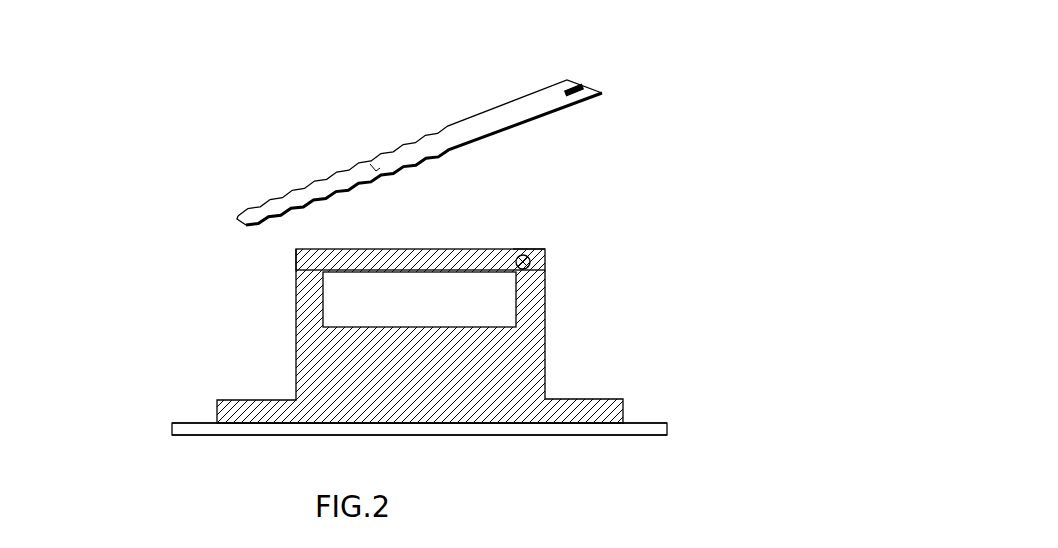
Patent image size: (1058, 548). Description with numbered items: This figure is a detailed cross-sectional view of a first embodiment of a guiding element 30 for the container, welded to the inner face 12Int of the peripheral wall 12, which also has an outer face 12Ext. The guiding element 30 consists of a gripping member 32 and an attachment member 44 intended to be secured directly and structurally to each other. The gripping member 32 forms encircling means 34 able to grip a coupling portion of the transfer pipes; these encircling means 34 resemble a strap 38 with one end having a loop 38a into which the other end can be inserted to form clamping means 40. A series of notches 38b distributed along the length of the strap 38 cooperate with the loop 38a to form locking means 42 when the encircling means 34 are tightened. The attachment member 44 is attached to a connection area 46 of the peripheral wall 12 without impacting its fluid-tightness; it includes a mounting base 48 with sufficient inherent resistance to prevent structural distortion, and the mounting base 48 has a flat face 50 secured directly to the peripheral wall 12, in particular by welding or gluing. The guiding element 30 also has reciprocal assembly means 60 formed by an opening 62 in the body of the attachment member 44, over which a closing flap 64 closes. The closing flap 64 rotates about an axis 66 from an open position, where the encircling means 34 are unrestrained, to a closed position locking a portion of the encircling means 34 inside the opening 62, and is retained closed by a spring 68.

The peripheral wall 12 is at (397, 408).
The inner face 12Int is at (190, 422).
The outer face 12Ext is at (217, 437).
The guiding element 30 is at (222, 243).
The gripping member 32 is at (469, 112).
The encircling means 34 is at (469, 112).
The strap 38 is at (469, 112).
The loop 38a is at (580, 80).
The notches 38b is at (431, 187).
The clamping means 40 is at (511, 132).
The locking means 42 is at (536, 105).
The attachment member 44 is at (388, 357).
The connection area 46 is at (268, 420).
The mounting base 48 is at (233, 412).
The flat face 50 is at (560, 423).
The reciprocal assembly means 60 is at (344, 262).
The opening 62 is at (357, 305).
The closing flap 64 is at (313, 255).
The axis 66 is at (533, 258).
The spring 68 is at (513, 247).